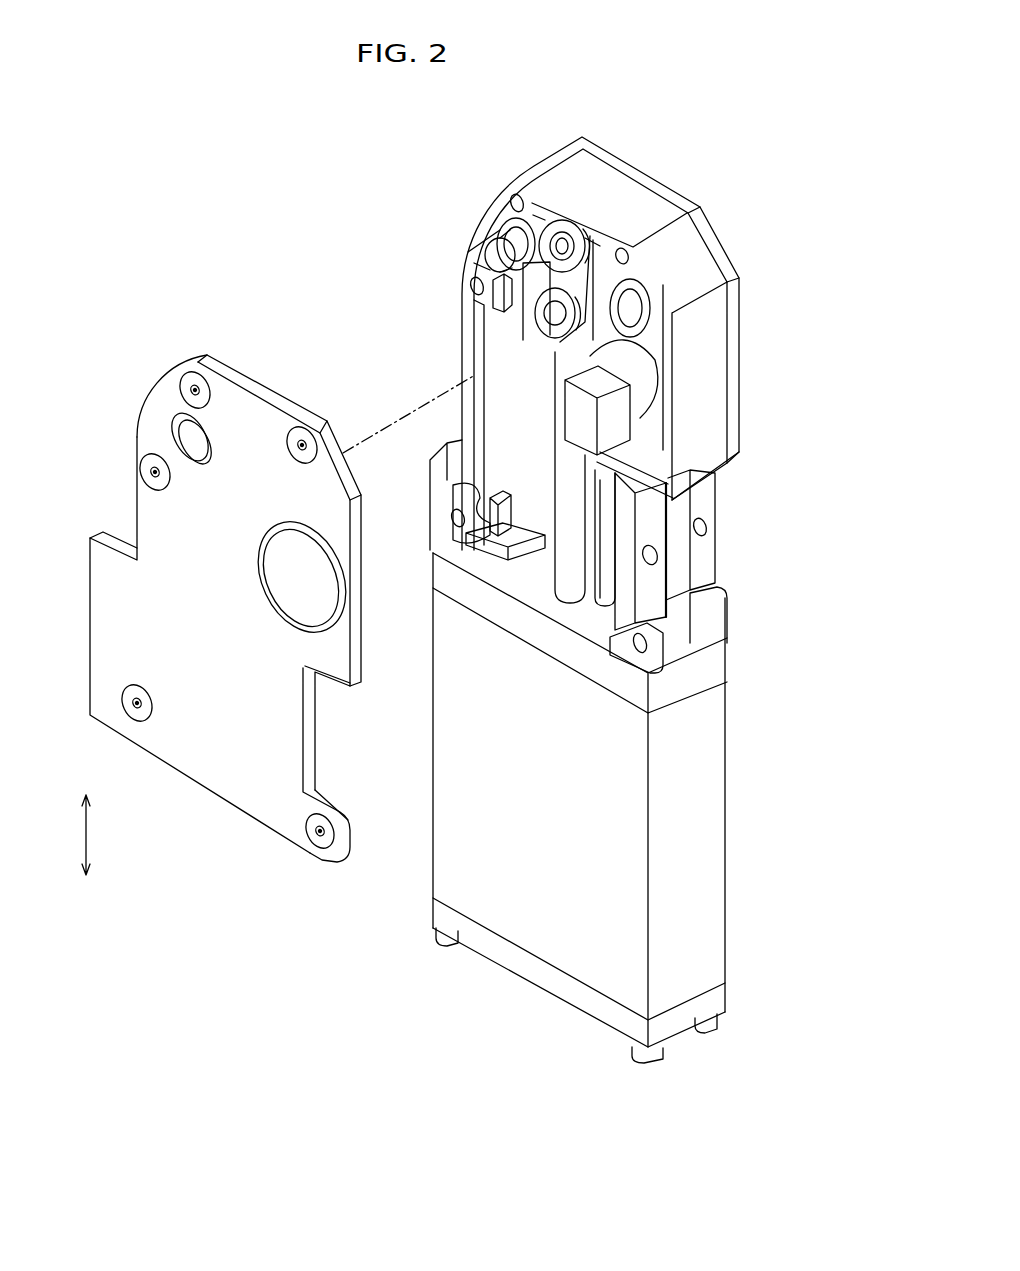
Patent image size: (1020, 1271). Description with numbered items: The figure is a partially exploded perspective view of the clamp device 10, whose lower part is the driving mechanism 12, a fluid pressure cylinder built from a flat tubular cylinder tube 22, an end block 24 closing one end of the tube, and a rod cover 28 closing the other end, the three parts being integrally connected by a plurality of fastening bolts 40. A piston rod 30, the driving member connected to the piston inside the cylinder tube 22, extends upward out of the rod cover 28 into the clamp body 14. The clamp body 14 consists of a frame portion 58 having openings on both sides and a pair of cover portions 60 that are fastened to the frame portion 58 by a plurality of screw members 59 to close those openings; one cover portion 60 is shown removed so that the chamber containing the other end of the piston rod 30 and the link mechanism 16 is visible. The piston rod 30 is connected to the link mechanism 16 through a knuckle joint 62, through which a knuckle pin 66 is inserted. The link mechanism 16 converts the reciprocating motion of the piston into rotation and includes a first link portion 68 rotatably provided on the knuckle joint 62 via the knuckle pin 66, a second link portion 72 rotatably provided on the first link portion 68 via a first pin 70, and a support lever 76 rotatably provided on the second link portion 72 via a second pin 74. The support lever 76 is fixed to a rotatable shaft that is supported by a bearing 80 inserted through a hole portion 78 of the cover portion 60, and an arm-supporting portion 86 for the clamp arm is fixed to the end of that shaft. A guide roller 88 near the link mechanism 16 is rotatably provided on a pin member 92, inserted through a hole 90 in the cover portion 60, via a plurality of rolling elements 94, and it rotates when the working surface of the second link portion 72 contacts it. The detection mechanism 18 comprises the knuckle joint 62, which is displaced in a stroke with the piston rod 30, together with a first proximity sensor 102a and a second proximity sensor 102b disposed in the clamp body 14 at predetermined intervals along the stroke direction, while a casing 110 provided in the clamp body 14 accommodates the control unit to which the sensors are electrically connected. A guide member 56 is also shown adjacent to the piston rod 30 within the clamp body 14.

The clamp device 10 is at (283, 138).
The driving mechanism 12 is at (735, 722).
The clamp body 14 is at (734, 236).
The link mechanism 16 is at (634, 246).
The detection mechanism 18 is at (372, 402).
The cylinder tube 22 is at (705, 885).
The end block 24 is at (705, 990).
The rod cover 28 is at (715, 655).
The piston rod 30 is at (573, 462).
The fastening bolts 40 is at (703, 1015).
The guide housing 56 is at (695, 563).
The frame portion 58 is at (702, 367).
The screw members 59 is at (206, 390).
The cover portions 60 is at (198, 760).
The knuckle joint 62 is at (557, 343).
The knuckle pin 66 is at (553, 313).
The first link portion 68 is at (590, 238).
The first pin 70 is at (560, 243).
The second link portion 72 is at (600, 257).
The second pin 74 is at (633, 300).
The support lever 76 is at (650, 345).
The hole portion 78 is at (288, 562).
The bearing 80 is at (278, 607).
The arm-supporting portion 86 is at (633, 427).
The guide roller 88 is at (505, 232).
The hole 90 is at (175, 430).
The pin member 92 is at (498, 258).
The rolling elements 94 is at (515, 233).
The first proximity sensor 102a is at (497, 307).
The second proximity sensor 102b is at (505, 488).
The casing 110 is at (433, 500).